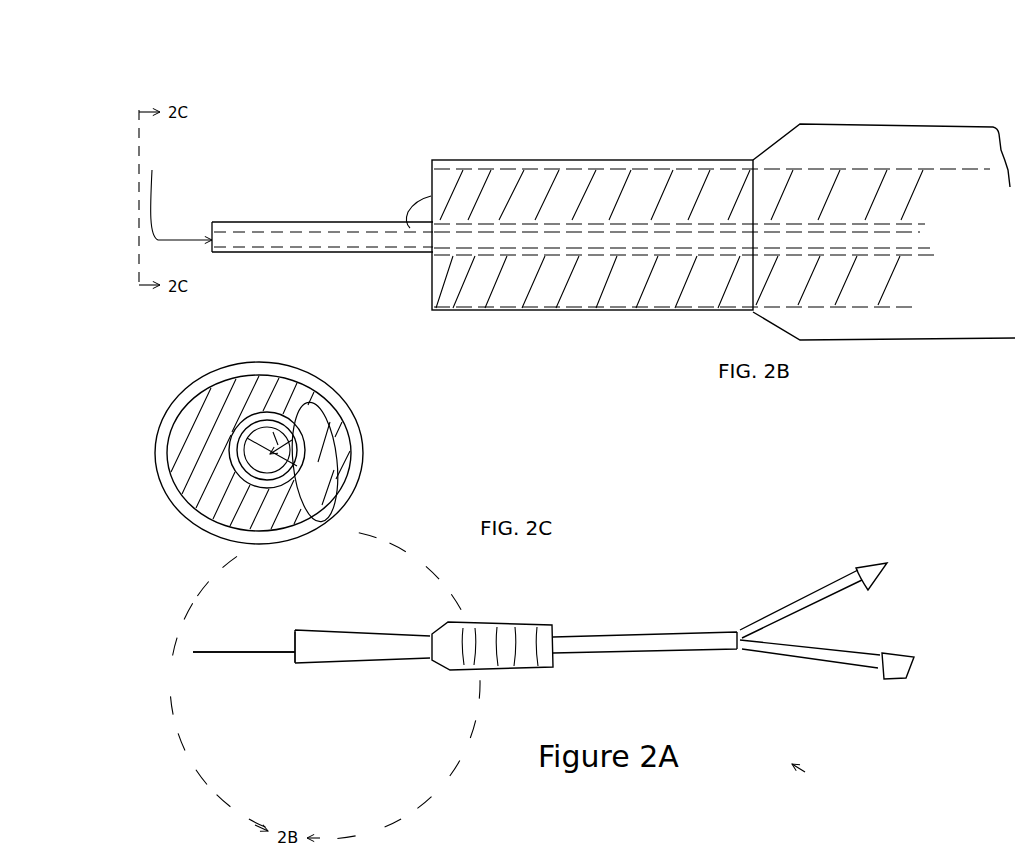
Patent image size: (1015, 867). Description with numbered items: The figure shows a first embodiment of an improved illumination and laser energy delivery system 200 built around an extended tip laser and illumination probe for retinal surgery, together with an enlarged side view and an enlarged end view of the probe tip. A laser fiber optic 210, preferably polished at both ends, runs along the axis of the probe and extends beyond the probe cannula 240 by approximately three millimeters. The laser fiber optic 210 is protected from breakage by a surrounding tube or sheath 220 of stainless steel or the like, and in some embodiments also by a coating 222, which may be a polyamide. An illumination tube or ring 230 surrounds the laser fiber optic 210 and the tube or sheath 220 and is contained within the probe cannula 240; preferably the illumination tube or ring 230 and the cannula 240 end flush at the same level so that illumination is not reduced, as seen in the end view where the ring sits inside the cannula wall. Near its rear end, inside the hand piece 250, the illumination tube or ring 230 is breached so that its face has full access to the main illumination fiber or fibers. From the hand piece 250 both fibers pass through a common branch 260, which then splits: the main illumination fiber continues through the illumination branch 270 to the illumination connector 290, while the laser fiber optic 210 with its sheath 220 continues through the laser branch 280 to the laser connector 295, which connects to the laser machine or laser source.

In FIG. 2A, the illumination and laser energy delivery system 200 is at (824, 776).
In FIG. 2B, the laser fiber optic 210 is at (181, 184).
In FIG. 2C, the laser fiber optic 210 is at (333, 518).
In FIG. 2A, the laser fiber optic 210 is at (189, 666).
In FIG. 2B, the tube or sheath 220 is at (286, 219).
In FIG. 2C, the tube or sheath 220 is at (326, 396).
In FIG. 2B, the coating 222 is at (321, 221).
In FIG. 2B, the illumination tube or ring 230 is at (430, 271).
In FIG. 2C, the illumination tube or ring 230 is at (326, 450).
In FIG. 2A, the illumination tube or ring 230 is at (290, 643).
In FIG. 2B, the probe cannula 240 is at (613, 154).
In FIG. 2C, the probe cannula 240 is at (372, 466).
In FIG. 2A, the probe cannula 240 is at (361, 665).
In FIG. 2B, the hand piece 250 is at (881, 105).
In FIG. 2A, the hand piece 250 is at (501, 604).
In FIG. 2A, the common branch 260 is at (646, 613).
In FIG. 2A, the illumination branch 270 is at (798, 585).
In FIG. 2A, the laser branch 280 is at (808, 665).
In FIG. 2A, the illumination connector 290 is at (883, 544).
In FIG. 2A, the laser connector 295 is at (918, 679).